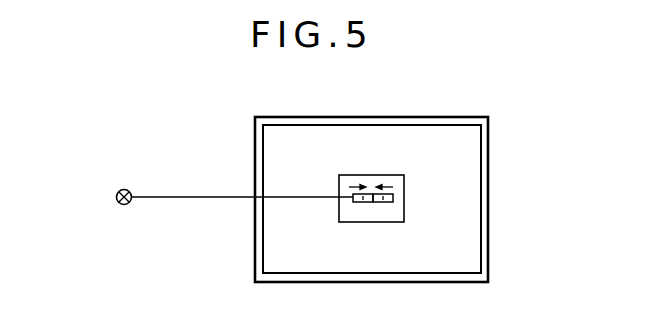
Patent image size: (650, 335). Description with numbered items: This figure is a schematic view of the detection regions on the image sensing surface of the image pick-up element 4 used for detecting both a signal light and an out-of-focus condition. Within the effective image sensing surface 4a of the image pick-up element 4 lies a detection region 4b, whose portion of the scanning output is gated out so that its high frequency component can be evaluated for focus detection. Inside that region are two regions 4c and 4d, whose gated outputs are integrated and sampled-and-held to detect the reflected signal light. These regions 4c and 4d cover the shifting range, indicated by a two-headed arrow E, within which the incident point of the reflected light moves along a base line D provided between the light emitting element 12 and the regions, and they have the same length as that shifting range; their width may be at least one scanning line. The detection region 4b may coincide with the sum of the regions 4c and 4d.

The image pick-up element 4 is at (438, 115).
The effective image sensing surface 4a is at (472, 146).
The detection region 4b is at (400, 212).
The region 4c is at (360, 203).
The region 4d is at (385, 203).
The light emitting element 12 is at (128, 190).
The base line D is at (233, 198).
The two-headed arrow E is at (372, 186).